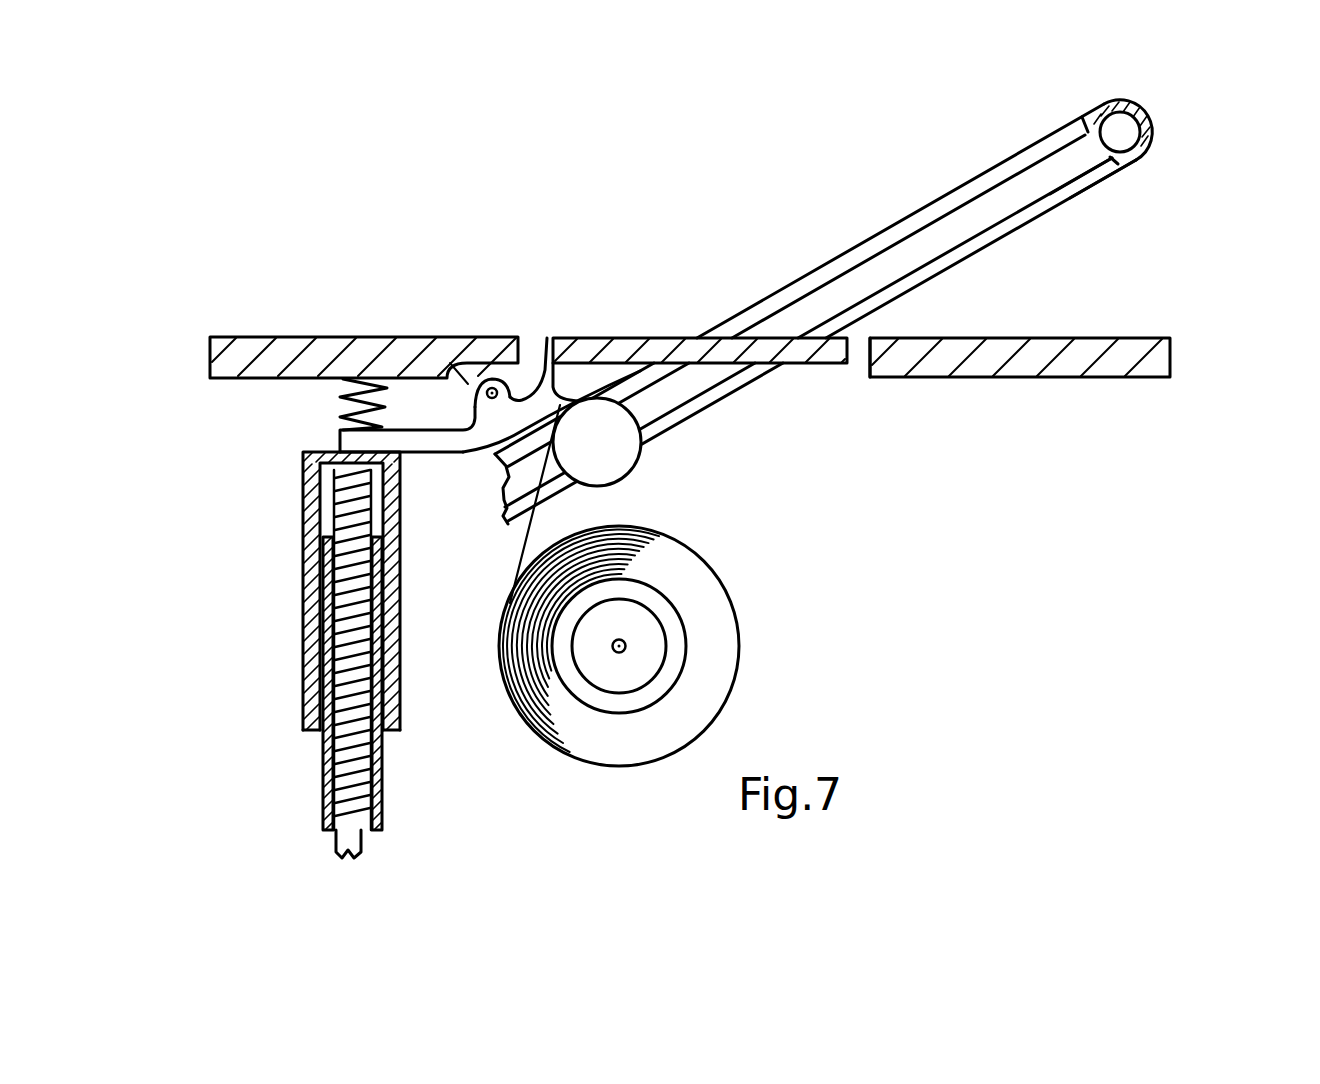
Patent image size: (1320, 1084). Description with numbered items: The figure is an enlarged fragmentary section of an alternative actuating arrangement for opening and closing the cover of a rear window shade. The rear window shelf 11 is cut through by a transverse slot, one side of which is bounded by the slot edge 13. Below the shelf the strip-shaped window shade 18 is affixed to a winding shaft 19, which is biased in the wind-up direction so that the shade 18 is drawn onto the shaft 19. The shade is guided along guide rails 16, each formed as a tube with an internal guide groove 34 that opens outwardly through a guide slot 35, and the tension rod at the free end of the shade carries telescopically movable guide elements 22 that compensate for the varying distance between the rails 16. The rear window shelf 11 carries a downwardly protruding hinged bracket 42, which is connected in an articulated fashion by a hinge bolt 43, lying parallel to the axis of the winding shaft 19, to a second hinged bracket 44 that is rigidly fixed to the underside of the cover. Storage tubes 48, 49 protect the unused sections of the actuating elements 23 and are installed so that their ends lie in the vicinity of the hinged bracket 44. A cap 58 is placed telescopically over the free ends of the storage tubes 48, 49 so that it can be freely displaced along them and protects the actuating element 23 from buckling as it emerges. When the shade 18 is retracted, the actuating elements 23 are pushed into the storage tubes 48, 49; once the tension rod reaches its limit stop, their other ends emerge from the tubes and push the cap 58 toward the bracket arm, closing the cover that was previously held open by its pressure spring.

The rear window shelf 11 is at (278, 358).
The slot edge 13 is at (872, 362).
The guide rail 16 is at (913, 217).
The window shade 18 is at (522, 553).
The winding shaft 19 is at (672, 628).
The guide element 22 is at (609, 452).
The actuating element 23 is at (350, 867).
The guide groove 34 is at (1122, 130).
The guide slot 35 is at (1074, 170).
The hinged bracket 42 is at (470, 395).
The hinge bolt 43 is at (492, 380).
The second hinged bracket 44 is at (527, 415).
The storage tube 48 is at (383, 805).
The storage tube 49 is at (383, 805).
The cap 58 is at (305, 625).